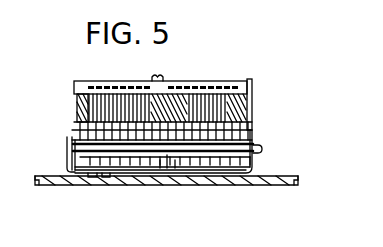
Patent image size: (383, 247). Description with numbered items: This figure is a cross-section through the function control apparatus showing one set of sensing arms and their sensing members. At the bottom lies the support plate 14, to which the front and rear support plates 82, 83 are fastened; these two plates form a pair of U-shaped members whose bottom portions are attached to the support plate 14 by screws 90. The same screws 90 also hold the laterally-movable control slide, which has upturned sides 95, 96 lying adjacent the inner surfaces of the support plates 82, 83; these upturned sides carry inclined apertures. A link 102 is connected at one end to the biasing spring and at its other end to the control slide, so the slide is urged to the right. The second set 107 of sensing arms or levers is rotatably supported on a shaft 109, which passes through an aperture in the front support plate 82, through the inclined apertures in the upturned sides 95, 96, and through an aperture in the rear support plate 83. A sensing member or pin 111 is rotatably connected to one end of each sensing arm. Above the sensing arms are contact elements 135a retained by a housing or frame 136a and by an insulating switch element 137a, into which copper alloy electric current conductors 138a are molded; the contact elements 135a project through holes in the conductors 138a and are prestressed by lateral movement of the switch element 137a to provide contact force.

The support plate 14 is at (48, 186).
The front support plate 82 is at (75, 100).
The rear support plate 83 is at (253, 105).
The screws 90 is at (88, 174).
The upturned side of control slide 95 is at (73, 125).
The upturned side of control slide 96 is at (263, 127).
The link 102 is at (167, 168).
The second set of sensing arms 107 is at (181, 158).
The shaft 109 is at (261, 150).
The sensing member or pin 111 is at (72, 134).
The contact elements 135a is at (254, 117).
The housing or frame 136a is at (248, 81).
The switch element 137a is at (100, 82).
The electric current conductors 138a is at (189, 84).